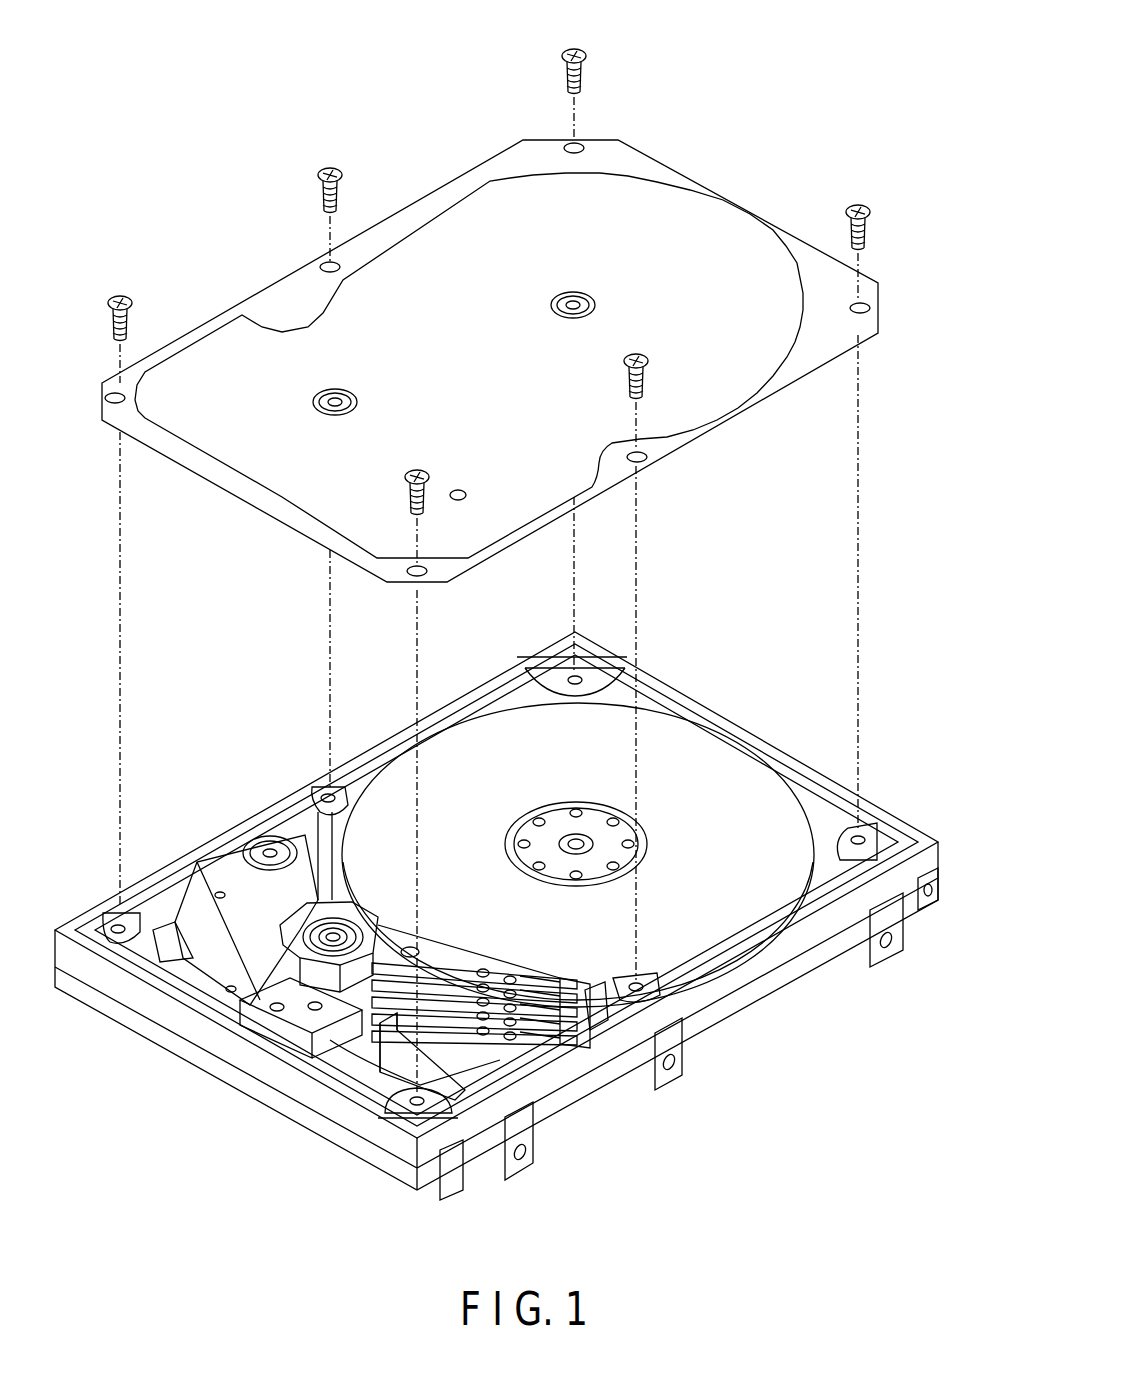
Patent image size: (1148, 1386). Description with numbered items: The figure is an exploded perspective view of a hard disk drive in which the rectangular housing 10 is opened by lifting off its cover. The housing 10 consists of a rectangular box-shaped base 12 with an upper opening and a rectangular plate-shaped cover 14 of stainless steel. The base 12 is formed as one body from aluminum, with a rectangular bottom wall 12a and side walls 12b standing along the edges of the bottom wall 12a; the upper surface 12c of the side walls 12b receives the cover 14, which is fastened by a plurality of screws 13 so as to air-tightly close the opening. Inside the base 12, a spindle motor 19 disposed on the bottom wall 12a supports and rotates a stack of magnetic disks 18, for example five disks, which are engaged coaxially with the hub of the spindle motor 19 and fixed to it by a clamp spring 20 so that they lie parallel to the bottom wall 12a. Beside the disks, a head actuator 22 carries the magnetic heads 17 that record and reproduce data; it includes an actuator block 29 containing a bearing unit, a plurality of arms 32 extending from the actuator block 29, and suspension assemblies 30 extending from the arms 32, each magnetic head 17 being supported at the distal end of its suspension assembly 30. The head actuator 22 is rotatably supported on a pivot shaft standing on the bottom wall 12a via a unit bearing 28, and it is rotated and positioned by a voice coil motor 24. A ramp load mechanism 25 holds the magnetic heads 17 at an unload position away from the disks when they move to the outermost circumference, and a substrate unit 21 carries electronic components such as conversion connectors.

The housing 10 is at (888, 489).
The base 12 is at (714, 1038).
The bottom wall 12a is at (483, 1067).
The side walls 12b is at (268, 797).
The upper surface of side wall 12c is at (818, 897).
The screws 13 is at (575, 47).
The cover 14 is at (700, 214).
The magnetic heads 17 is at (574, 993).
The magnetic disks 18 is at (704, 770).
The spindle motor 19 is at (584, 831).
The clamp spring 20 is at (527, 834).
The substrate unit (FPC unit) 21 is at (383, 1085).
The head actuator 22 is at (443, 937).
The voice coil motor 24 is at (233, 963).
The ramp load mechanism 25 is at (586, 990).
The unit bearing 28 is at (353, 915).
The actuator block 29 is at (362, 928).
The suspension assemblies 30 is at (548, 968).
The arms 32 is at (463, 961).